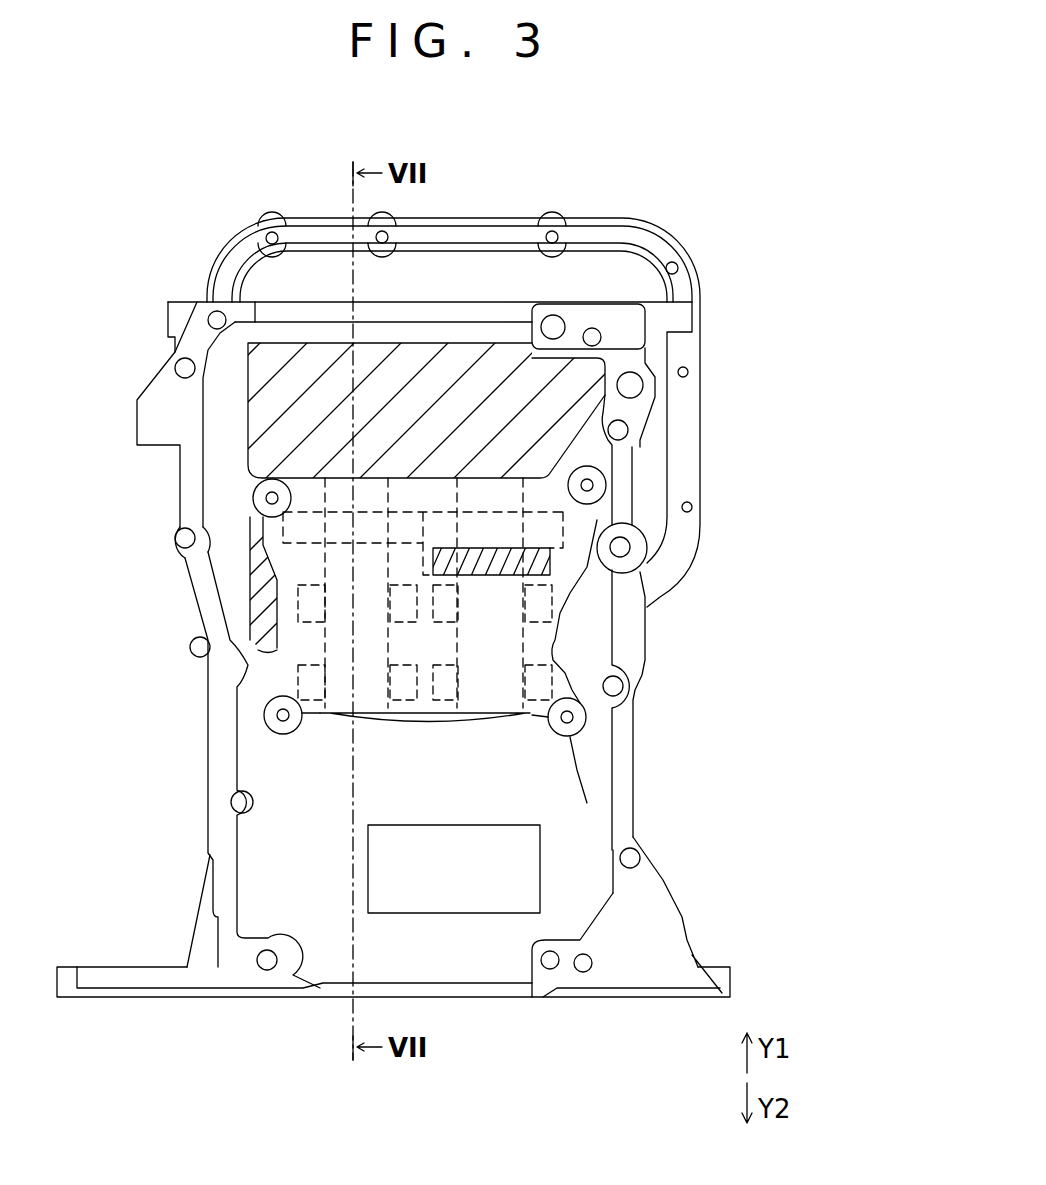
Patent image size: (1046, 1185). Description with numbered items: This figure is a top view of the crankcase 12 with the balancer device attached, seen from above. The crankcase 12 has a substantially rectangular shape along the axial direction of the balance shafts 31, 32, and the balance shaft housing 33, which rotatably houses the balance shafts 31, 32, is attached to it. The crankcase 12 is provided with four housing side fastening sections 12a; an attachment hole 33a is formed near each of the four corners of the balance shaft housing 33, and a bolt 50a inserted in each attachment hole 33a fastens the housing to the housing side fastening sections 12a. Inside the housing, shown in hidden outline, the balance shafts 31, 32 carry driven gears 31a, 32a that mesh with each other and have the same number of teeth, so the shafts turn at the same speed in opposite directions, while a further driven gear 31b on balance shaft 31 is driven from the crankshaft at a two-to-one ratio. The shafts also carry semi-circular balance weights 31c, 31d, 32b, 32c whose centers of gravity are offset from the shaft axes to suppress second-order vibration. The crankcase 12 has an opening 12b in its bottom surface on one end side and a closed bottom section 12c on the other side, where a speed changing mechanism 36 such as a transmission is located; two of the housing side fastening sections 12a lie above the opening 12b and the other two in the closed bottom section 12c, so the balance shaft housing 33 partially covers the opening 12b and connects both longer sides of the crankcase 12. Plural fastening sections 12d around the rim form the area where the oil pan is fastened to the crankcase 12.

The crankcase 12 is at (622, 975).
The housing side fastening section 12a is at (245, 507).
The opening 12b is at (566, 366).
The closed bottom section 12c is at (563, 860).
The fastening section 12d is at (272, 232).
The balance shaft 31 is at (485, 480).
The driven gear 31a is at (560, 565).
The driven gear 31b is at (537, 562).
The balance weight 31c is at (552, 600).
The balance weight 31d is at (537, 700).
The balance shaft 32 is at (377, 478).
The driven gear 32a is at (283, 550).
The balance weight 32b is at (298, 598).
The balance weight 32c is at (403, 690).
The balance shaft housing 33 is at (573, 520).
The attachment hole 33a is at (277, 480).
The speed changing mechanism 36 is at (490, 915).
The bolt 50a is at (272, 498).